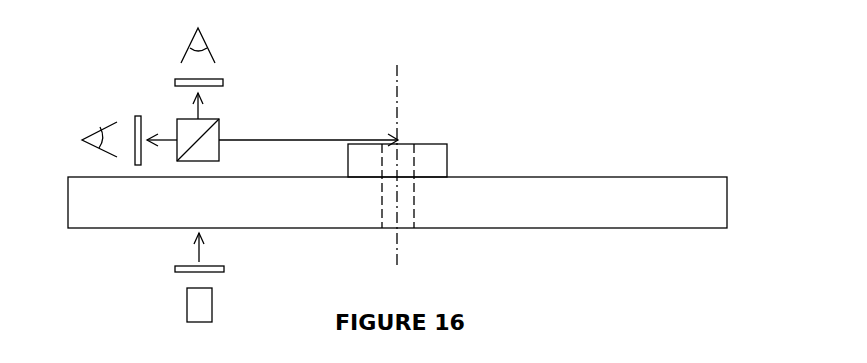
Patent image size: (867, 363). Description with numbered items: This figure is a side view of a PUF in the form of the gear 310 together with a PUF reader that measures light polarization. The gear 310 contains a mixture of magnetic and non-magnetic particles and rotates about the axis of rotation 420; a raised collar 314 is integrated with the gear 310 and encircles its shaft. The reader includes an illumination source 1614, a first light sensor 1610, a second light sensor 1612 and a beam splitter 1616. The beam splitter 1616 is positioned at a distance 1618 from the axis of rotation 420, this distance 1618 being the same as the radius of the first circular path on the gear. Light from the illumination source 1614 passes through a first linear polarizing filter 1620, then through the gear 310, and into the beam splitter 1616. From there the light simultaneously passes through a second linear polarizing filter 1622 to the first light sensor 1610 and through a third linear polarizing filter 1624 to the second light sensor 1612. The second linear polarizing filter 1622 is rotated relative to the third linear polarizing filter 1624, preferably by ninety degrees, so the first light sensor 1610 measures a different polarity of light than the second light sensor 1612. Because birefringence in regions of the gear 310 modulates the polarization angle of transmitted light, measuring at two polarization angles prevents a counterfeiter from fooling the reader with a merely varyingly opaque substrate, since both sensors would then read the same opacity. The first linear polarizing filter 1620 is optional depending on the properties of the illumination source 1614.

The gear 310 is at (628, 178).
The raised collar 314 is at (438, 144).
The axis of rotation 420 is at (397, 248).
The first light sensor 1610 is at (205, 42).
The second light sensor 1612 is at (108, 128).
The illumination source 1614 is at (187, 315).
The beam splitter 1616 is at (220, 132).
The distance 1618 is at (290, 140).
The first linear polarizing filter 1620 is at (175, 266).
The second linear polarizing filter 1622 is at (224, 78).
The third linear polarizing filter 1624 is at (138, 115).